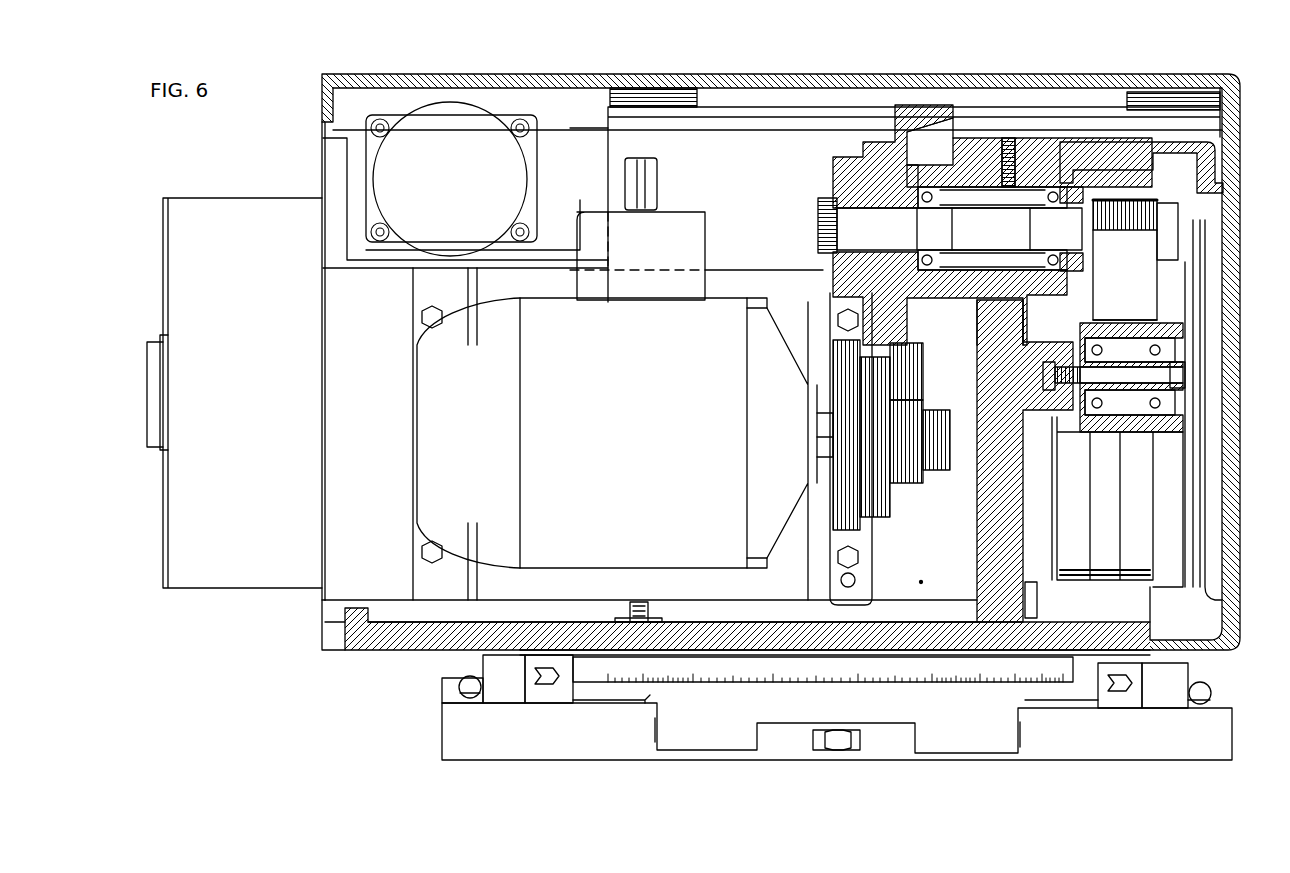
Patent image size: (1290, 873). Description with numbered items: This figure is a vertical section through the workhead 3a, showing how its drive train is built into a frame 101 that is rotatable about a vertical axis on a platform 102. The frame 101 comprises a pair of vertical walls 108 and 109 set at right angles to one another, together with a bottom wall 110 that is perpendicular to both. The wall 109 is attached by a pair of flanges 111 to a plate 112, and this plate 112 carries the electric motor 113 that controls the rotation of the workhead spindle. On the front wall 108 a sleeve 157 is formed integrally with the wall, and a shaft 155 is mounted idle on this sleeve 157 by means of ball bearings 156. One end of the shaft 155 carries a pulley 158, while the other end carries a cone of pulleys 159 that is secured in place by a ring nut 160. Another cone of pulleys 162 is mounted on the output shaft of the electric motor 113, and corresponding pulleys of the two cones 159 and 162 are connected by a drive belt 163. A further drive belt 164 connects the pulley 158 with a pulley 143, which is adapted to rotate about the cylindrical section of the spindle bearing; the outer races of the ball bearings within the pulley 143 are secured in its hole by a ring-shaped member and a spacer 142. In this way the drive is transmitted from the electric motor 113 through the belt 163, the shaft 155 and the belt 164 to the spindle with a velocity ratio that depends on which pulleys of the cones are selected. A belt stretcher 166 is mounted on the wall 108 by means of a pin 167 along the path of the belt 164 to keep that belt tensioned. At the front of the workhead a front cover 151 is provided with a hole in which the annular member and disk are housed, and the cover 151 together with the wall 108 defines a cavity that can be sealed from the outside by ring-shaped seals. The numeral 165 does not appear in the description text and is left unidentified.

The workhead 3a is at (298, 182).
The frame 101 is at (432, 665).
The platform 102 is at (1220, 737).
The vertical wall 108 is at (992, 542).
The vertical wall 109 is at (886, 572).
The bottom wall 110 is at (815, 598).
The flanges 111 is at (426, 590).
The plate 112 is at (698, 585).
The electric motor 113 is at (585, 558).
The spacer 142 is at (1053, 388).
The pulley 143 is at (1068, 563).
The front cover 151 is at (1222, 264).
The shaft 155 is at (968, 235).
The ball bearings 156 is at (932, 270).
The sleeve 157 is at (945, 173).
The pulley 158 is at (1138, 196).
The cone of pulleys 159 is at (830, 181).
The ring nut 160 is at (826, 200).
The cone of pulleys 162 is at (897, 487).
The drive belt 163 is at (908, 376).
The drive belt 164 is at (1172, 306).
The spindle 165 is at (1100, 425).
The belt stretcher 166 is at (1108, 430).
The pin 167 is at (1183, 373).